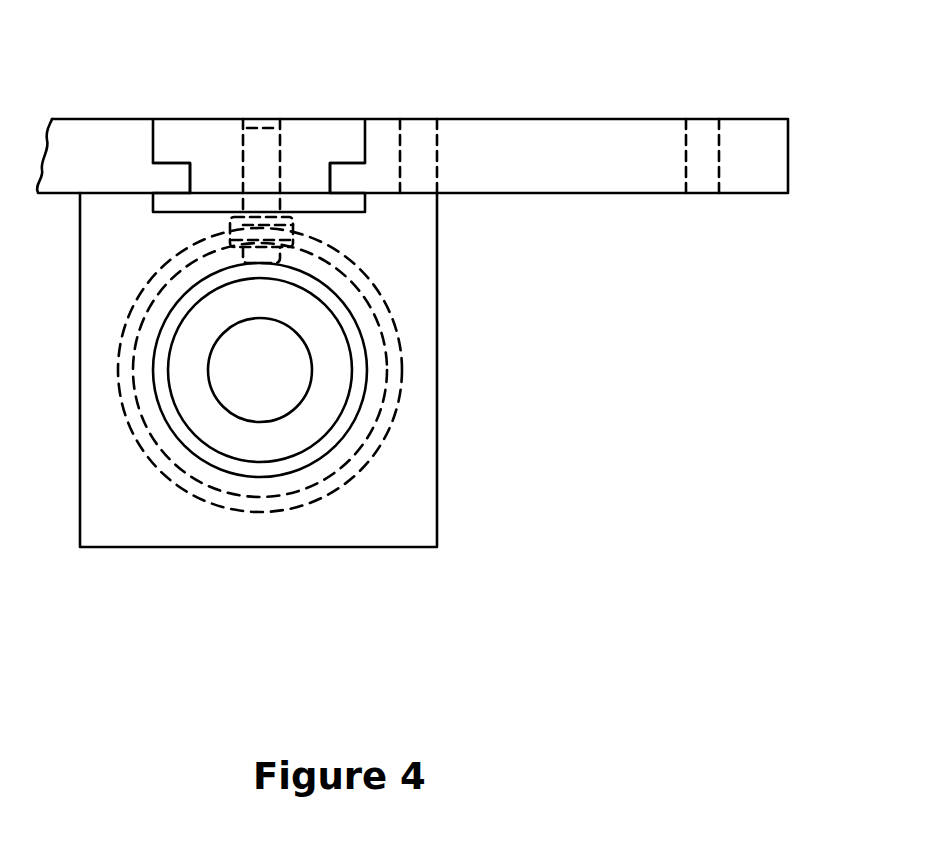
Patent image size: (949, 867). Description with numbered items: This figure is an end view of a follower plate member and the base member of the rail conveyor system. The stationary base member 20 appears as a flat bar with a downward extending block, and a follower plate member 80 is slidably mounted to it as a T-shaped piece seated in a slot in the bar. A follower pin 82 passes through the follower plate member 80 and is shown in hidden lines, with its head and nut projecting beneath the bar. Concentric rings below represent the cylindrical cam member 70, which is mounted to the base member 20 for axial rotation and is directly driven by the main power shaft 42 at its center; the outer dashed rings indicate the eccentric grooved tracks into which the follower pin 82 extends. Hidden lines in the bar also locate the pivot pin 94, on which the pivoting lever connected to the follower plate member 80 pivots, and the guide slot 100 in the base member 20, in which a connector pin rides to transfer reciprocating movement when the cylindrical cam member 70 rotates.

The base member 20 is at (120, 119).
The follower plate member 80 is at (318, 119).
The follower pin 82 is at (260, 175).
The pivot pin 94 is at (422, 147).
The guide slot 100 is at (720, 172).
The main power shaft 42 is at (225, 407).
The cylindrical cam member 70 is at (325, 493).